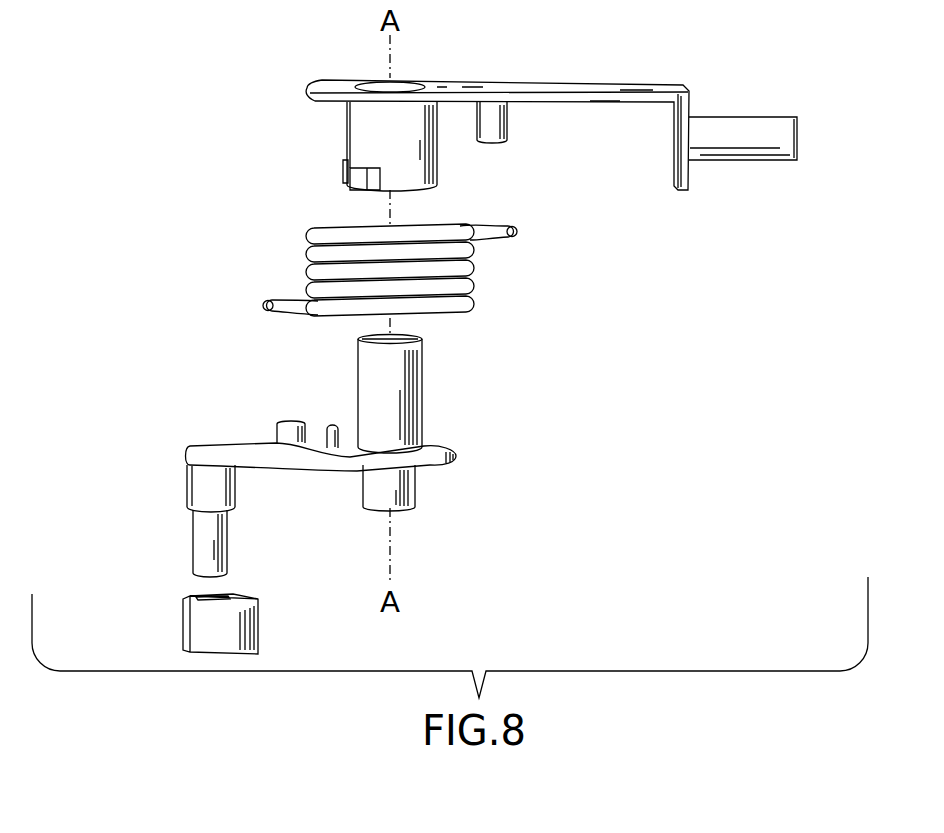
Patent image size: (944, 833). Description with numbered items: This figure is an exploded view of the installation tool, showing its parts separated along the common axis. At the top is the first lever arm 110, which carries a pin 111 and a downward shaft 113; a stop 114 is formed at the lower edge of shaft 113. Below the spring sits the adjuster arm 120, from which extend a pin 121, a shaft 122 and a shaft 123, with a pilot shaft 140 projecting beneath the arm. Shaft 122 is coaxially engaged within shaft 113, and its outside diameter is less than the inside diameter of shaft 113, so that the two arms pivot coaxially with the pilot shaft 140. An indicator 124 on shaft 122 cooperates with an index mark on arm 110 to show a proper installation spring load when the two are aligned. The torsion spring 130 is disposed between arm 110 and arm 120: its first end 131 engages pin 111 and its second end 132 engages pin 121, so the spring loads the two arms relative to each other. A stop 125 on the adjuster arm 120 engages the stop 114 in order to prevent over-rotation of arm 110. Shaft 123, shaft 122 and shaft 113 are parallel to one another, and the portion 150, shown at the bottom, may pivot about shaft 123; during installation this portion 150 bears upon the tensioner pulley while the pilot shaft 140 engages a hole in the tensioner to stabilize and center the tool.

The first lever arm 110 is at (610, 85).
The pin 111 is at (490, 145).
The shaft 113 is at (347, 133).
The stop 114 is at (358, 181).
The adjuster arm 120 is at (187, 456).
The pin 121 is at (290, 422).
The shaft 122 is at (422, 412).
The shaft 123 is at (208, 527).
The indicator 124 is at (423, 341).
The stop 125 is at (333, 421).
The torsion spring 130 is at (477, 287).
The first end 131 is at (518, 228).
The second end 132 is at (265, 306).
The pilot shaft 140 is at (404, 505).
The portion 150 is at (205, 617).